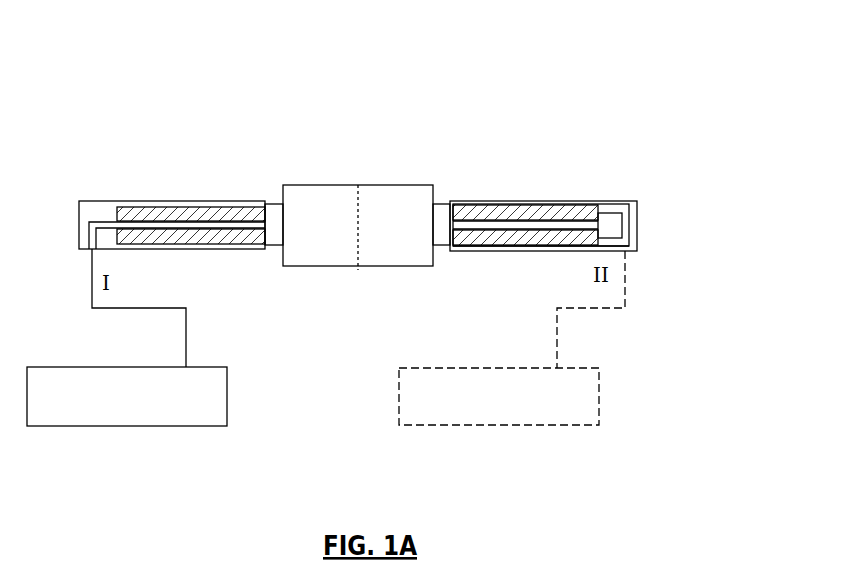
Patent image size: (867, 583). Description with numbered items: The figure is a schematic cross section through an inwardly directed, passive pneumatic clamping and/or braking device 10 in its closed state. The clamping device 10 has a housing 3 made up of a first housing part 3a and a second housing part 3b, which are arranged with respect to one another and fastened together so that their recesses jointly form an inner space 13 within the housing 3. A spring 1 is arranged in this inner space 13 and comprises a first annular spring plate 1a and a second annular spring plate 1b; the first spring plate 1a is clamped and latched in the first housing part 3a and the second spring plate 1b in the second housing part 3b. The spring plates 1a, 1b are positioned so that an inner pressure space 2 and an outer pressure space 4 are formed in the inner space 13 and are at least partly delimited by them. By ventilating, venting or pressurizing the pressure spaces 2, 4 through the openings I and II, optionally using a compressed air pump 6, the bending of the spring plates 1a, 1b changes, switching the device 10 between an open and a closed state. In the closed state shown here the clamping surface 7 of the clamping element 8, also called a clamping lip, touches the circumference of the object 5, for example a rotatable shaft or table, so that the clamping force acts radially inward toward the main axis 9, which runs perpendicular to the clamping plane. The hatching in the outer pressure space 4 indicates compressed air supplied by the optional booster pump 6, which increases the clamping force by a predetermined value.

The clamping device 10 is at (676, 85).
The spring 1 is at (530, 196).
The first annular spring plate 1a is at (192, 207).
The second annular spring plate 1b is at (190, 244).
The inner pressure space 2 is at (480, 226).
The housing 3 is at (637, 225).
The first housing part 3a is at (592, 201).
The second housing part 3b is at (548, 251).
The outer pressure space 4 is at (132, 207).
The object 5 is at (394, 185).
The compressed air pump 6 is at (326, 337).
The clamping surface 7 is at (433, 225).
The clamping element 8 is at (270, 246).
The main axis 9 is at (358, 185).
The inner space 13 is at (237, 204).